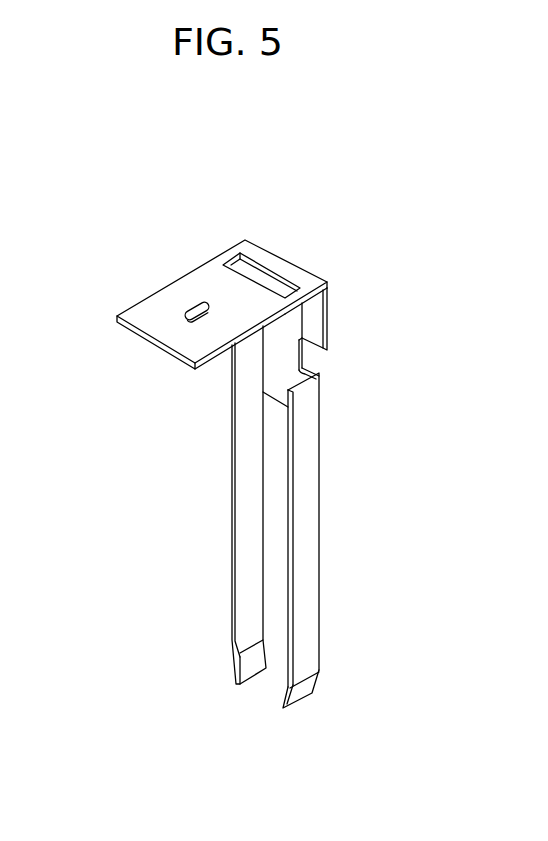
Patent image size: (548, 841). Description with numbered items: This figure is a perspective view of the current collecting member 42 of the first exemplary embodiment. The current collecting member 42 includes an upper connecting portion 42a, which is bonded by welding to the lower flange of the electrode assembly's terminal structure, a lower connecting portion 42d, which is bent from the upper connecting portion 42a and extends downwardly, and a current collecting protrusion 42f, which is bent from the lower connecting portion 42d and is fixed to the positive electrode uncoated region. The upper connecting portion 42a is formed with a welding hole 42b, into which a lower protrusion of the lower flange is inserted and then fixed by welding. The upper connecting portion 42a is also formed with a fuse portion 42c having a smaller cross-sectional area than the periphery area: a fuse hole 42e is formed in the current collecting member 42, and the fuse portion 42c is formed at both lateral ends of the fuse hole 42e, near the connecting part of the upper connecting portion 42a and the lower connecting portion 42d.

The current collecting member 42 is at (320, 438).
The upper connecting portion 42a is at (155, 315).
The welding hole 42b is at (197, 305).
The fuse portion 42c is at (296, 308).
The lower connecting portion 42d is at (313, 328).
The fuse hole 42e is at (261, 269).
The current collecting protrusion 42f is at (310, 507).